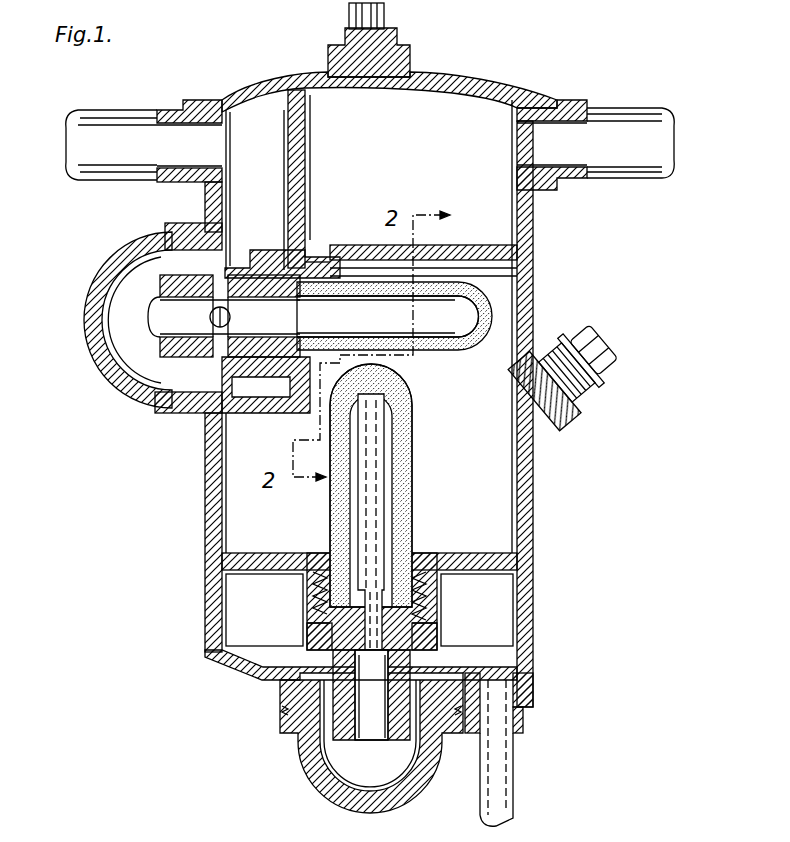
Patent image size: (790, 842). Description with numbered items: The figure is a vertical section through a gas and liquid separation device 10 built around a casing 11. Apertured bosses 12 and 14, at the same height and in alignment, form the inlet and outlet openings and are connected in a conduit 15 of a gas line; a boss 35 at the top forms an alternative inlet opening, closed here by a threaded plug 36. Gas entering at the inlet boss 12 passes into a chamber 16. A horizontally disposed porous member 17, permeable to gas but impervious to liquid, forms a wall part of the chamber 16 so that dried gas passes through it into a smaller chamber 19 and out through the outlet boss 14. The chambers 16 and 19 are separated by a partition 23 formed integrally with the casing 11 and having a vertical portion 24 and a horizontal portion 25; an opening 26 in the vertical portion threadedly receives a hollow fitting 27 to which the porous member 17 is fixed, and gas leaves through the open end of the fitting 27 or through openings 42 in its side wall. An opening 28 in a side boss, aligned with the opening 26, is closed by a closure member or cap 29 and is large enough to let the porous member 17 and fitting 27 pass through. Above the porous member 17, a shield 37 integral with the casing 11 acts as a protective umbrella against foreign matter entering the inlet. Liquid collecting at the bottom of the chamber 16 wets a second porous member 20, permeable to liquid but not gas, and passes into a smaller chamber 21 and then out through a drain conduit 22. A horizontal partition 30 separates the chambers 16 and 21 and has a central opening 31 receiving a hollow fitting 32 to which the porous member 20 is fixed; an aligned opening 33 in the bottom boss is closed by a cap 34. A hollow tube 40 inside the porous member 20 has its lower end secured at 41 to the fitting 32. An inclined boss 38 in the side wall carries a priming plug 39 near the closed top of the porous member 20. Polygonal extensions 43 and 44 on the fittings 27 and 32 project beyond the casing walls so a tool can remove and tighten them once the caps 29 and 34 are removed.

The device 10 is at (200, 443).
The casing 11 is at (205, 506).
The apertured boss 12 is at (560, 100).
The apertured boss 14 is at (186, 100).
The conduit 15 is at (100, 178).
The chamber 16 is at (394, 334).
The porous member 17 is at (440, 352).
The smaller chamber 19 is at (250, 189).
The porous member 20 is at (412, 502).
The smaller chamber 21 is at (369, 610).
The drain conduit 22 is at (516, 758).
The partition 23 is at (310, 132).
The vertical portion 24 is at (305, 174).
The horizontal portion 25 is at (272, 413).
The opening 26 is at (316, 268).
The hollow fitting 27 is at (266, 252).
The opening 28 is at (160, 398).
The closure member 29 is at (84, 325).
The horizontal partition 30 is at (275, 553).
The opening 31 is at (418, 553).
The hollow fitting 32 is at (307, 636).
The opening 33 is at (288, 696).
The closure member 34 is at (300, 763).
The boss 35 is at (410, 52).
The threaded plug 36 is at (345, 38).
The shield 37 is at (470, 245).
The apertured boss 38 is at (537, 398).
The plug 39 is at (592, 382).
The hollow tube 40 is at (382, 482).
The securing location 41 is at (437, 636).
The openings 42 is at (160, 315).
The polygonal extension 43 is at (120, 346).
The polygonal extension 44 is at (345, 742).